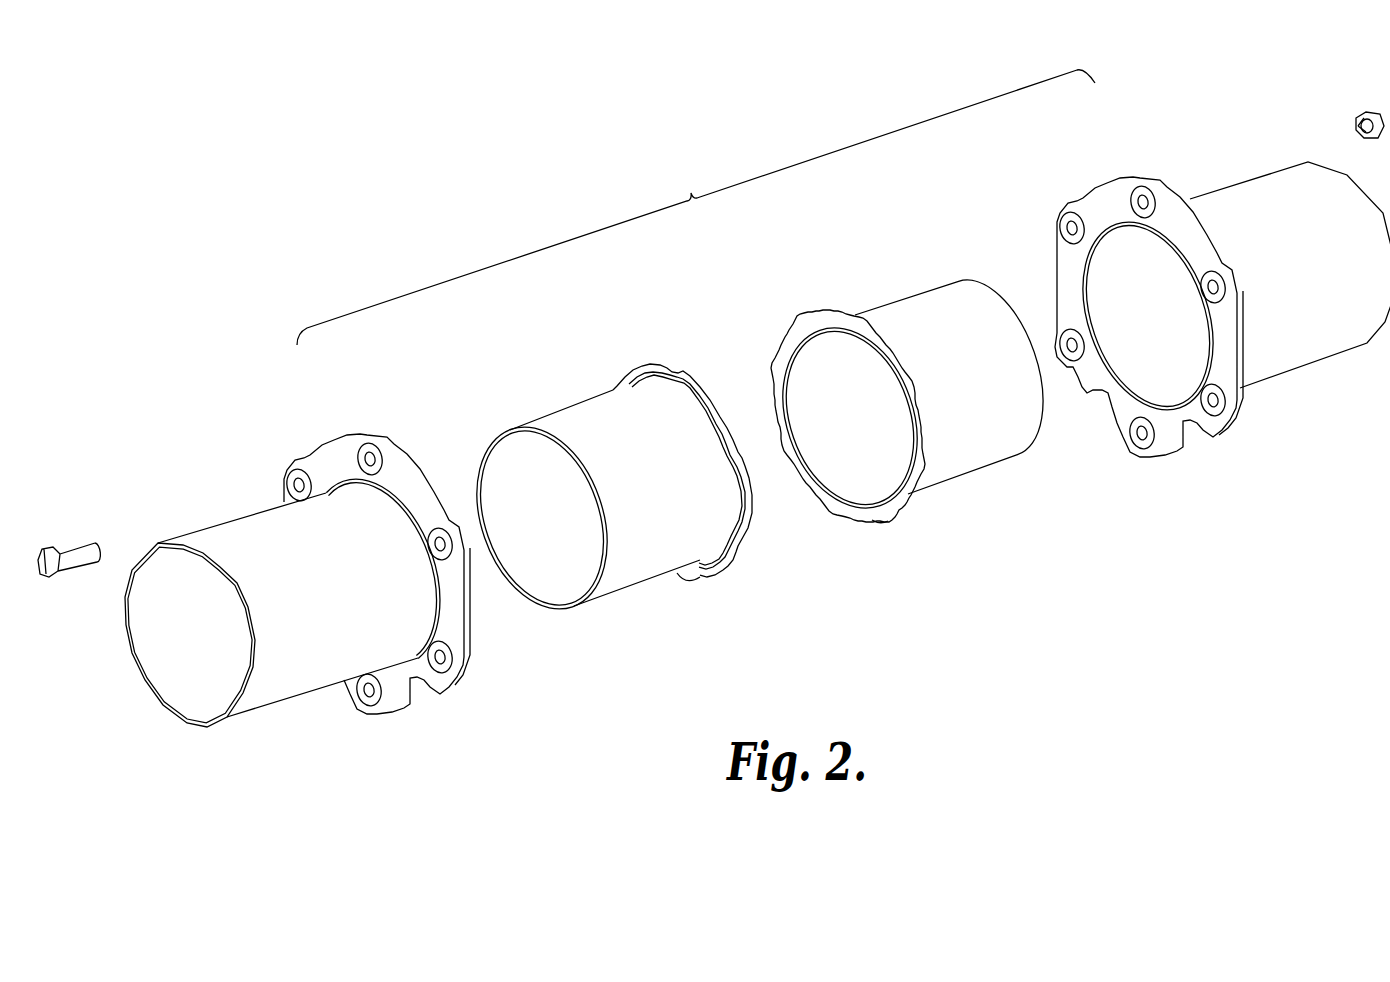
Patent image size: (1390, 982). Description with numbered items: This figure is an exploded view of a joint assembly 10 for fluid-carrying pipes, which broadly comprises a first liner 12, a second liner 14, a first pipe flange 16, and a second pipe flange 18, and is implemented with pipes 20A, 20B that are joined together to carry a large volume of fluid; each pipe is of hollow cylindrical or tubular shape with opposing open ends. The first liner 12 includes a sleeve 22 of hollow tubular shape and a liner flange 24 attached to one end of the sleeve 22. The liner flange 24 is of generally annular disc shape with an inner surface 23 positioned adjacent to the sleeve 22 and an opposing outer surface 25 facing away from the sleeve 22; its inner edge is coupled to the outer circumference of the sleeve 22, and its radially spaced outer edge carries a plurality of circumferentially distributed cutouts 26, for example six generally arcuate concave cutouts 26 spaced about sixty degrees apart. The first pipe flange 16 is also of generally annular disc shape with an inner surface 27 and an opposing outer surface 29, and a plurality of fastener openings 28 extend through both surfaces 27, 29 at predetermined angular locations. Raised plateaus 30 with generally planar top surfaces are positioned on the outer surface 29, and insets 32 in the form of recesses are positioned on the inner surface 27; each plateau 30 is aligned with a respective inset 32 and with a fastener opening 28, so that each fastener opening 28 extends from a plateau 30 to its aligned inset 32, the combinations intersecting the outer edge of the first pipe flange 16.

The joint assembly 10 is at (655, 165).
The first liner 12 is at (758, 433).
The second liner 14 is at (852, 378).
The first pipe flange 16 is at (397, 552).
The second pipe flange 18 is at (1155, 285).
The pipe 20A is at (192, 537).
The pipe 20B is at (1298, 172).
The sleeve 22 is at (540, 432).
The inner surface 23 is at (710, 575).
The liner flange 24 is at (638, 372).
The outer surface 25 is at (882, 515).
The cutout 26 is at (684, 362).
The inner surface 27 is at (450, 620).
The fastener opening 28 is at (376, 440).
The outer surface 29 is at (1158, 283).
The raised plateau 30 is at (1088, 332).
The inset 32 is at (360, 482).